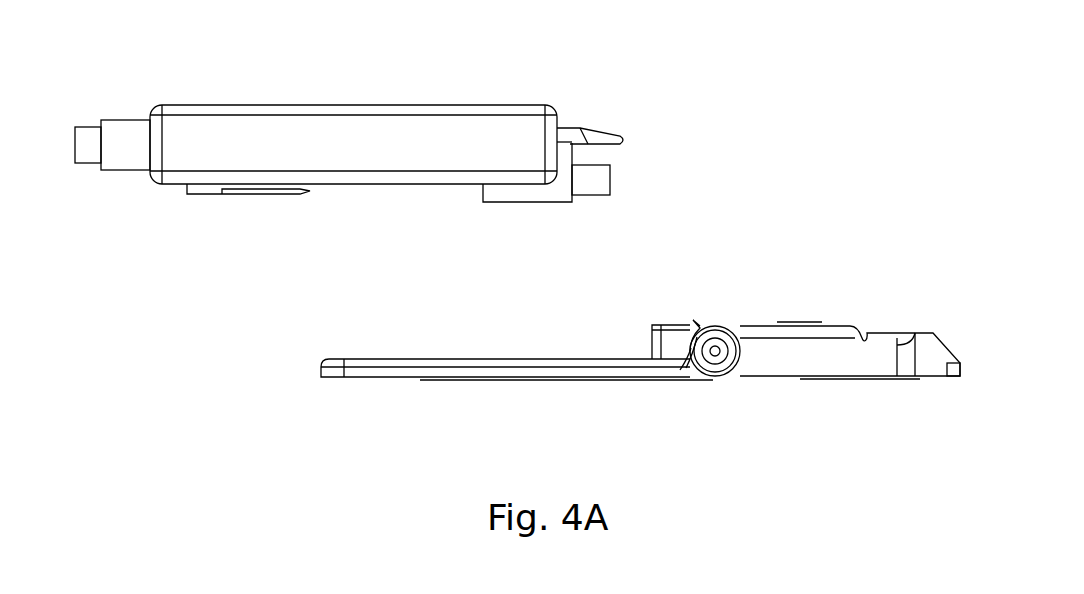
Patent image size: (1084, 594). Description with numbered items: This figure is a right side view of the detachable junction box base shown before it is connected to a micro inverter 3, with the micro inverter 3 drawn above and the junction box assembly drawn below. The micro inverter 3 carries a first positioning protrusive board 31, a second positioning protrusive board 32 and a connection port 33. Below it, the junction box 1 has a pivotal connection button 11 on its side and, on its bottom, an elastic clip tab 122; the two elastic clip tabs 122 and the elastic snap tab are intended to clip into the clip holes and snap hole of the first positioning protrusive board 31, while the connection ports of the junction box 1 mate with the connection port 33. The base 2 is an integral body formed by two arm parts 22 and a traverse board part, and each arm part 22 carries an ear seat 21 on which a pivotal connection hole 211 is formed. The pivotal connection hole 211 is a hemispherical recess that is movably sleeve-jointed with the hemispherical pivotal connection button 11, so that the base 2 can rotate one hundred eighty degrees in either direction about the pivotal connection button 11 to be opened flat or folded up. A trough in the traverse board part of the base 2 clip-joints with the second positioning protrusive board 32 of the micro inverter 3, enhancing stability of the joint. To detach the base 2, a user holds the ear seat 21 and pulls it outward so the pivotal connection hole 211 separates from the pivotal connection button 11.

The junction box 1 is at (853, 320).
The pivotal connection button 11 is at (722, 352).
The elastic clip tab 122 is at (668, 336).
The base 2 is at (406, 382).
The ear seat 21 is at (698, 349).
The pivotal connection hole 211 is at (715, 355).
The arm part 22 is at (527, 363).
The micro inverter 3 is at (528, 95).
The first positioning protrusive board 31 is at (622, 145).
The second positioning protrusive board 32 is at (252, 192).
The connection port 33 is at (587, 186).